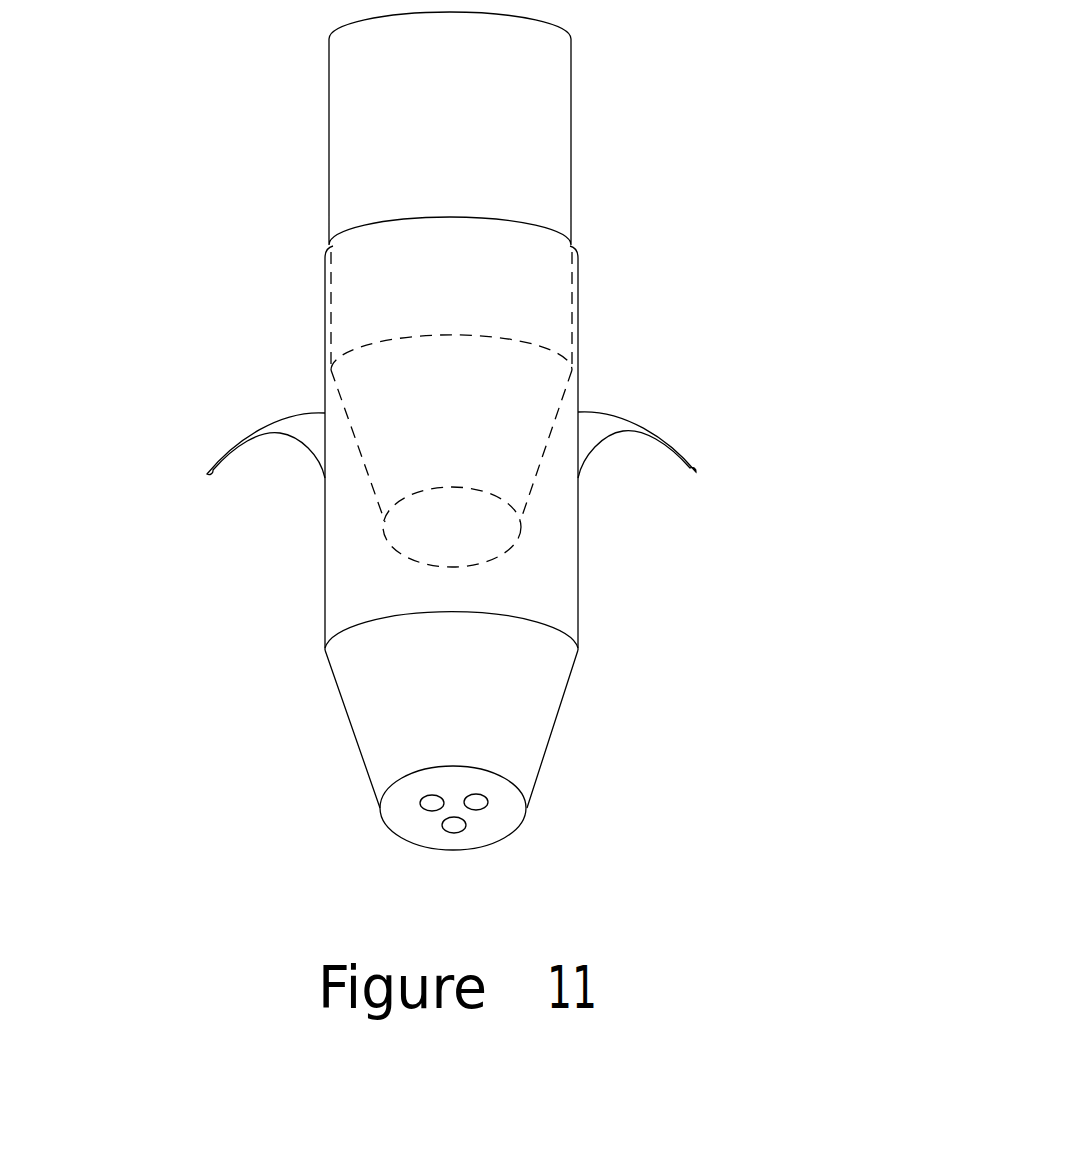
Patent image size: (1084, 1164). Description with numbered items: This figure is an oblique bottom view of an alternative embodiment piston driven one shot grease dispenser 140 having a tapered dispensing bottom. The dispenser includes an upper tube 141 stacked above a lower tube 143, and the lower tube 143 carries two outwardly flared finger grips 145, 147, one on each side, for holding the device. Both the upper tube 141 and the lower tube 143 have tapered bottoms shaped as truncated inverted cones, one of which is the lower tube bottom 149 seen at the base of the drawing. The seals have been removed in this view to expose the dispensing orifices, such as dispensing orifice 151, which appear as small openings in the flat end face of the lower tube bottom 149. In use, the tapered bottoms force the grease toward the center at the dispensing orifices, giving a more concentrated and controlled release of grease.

The piston driven one shot grease dispenser 140 is at (496, 469).
The upper tube 141 is at (563, 117).
The lower tube 143 is at (343, 600).
The finger grip 145 is at (698, 458).
The finger grip 147 is at (208, 460).
The lower tube bottom 149 is at (525, 755).
The dispensing orifice 151 is at (432, 806).